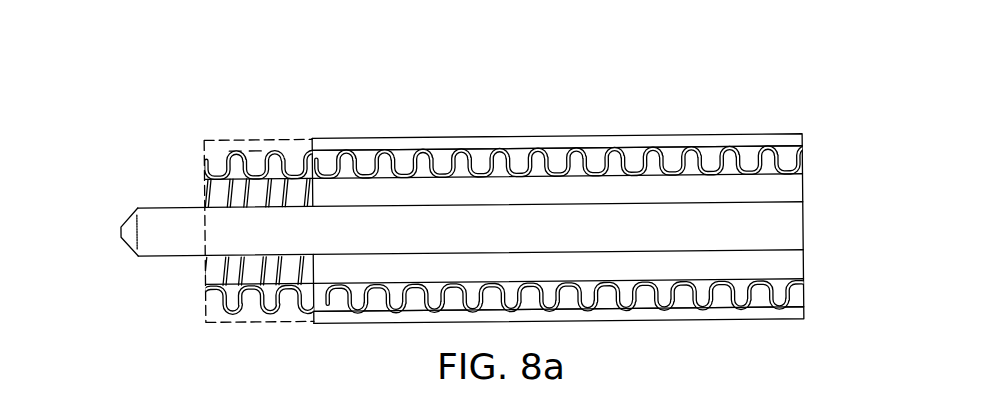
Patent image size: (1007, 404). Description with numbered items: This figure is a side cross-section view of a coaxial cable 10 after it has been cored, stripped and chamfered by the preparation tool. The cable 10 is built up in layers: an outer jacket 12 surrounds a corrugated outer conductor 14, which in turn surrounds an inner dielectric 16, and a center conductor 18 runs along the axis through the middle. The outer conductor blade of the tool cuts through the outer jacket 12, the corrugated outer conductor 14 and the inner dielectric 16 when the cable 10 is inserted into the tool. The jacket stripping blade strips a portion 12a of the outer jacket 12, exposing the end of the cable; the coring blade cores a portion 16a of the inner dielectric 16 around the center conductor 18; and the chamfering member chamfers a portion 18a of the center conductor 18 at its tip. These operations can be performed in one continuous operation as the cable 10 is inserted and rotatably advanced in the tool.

The coaxial cable 10 is at (675, 89).
The outer jacket 12 is at (797, 137).
The corrugated outer conductor 14 is at (797, 159).
The inner dielectric 16 is at (782, 186).
The center conductor 18 is at (778, 225).
The portion of the outer jacket 12a is at (256, 137).
The portion of the inner dielectric 16a is at (242, 192).
The portion of the center conductor 18a is at (128, 247).